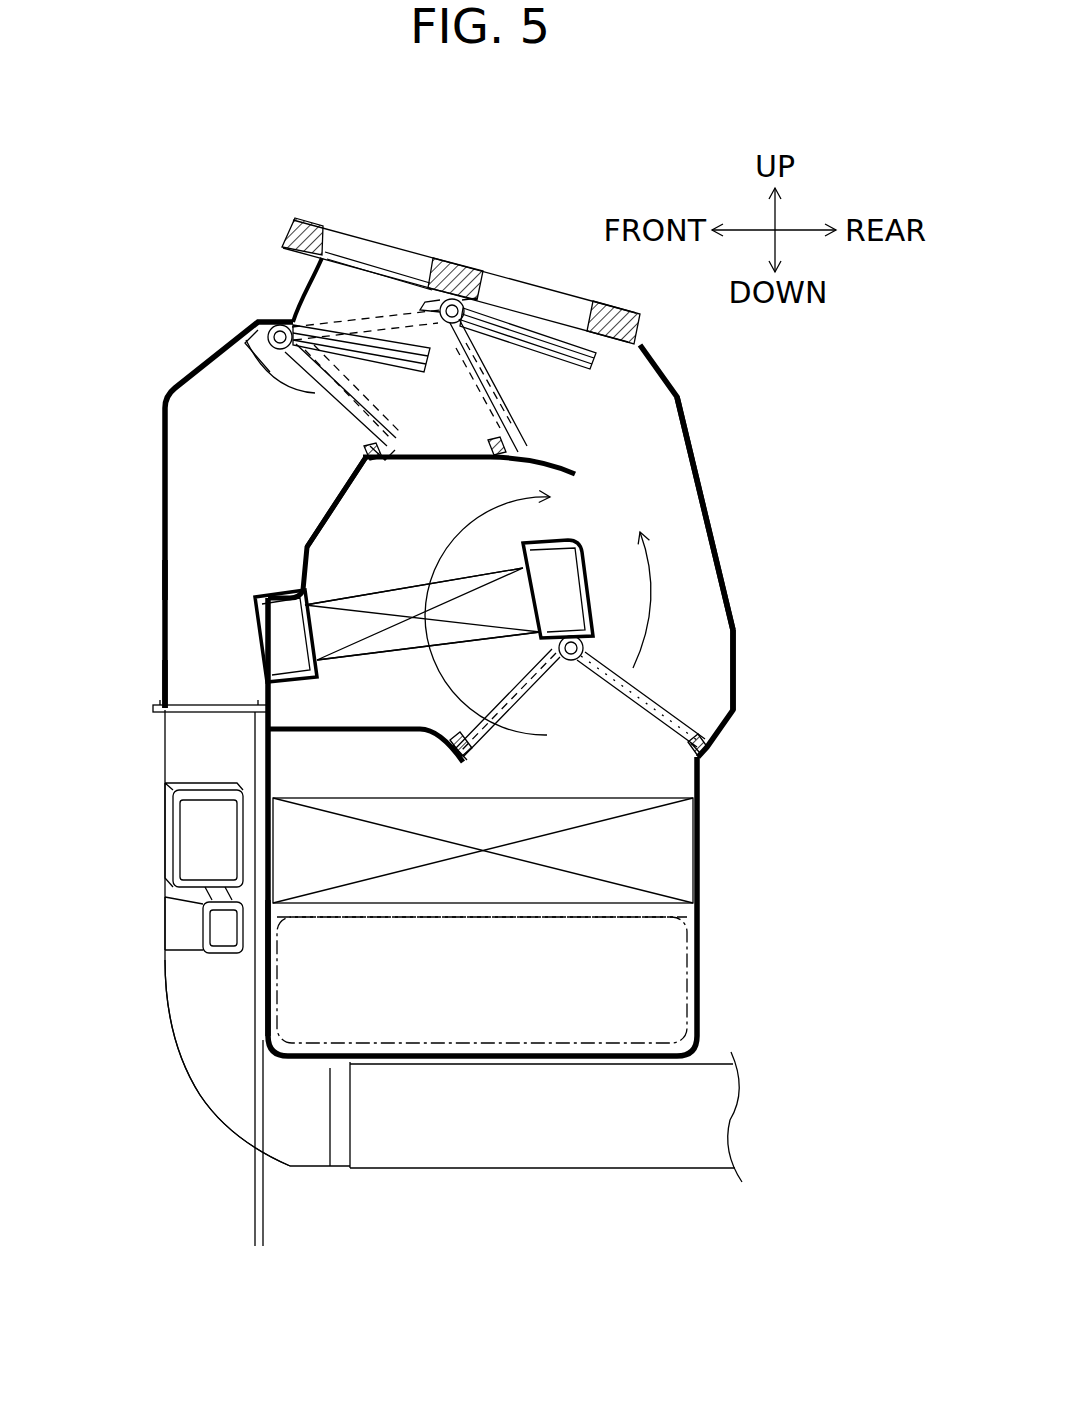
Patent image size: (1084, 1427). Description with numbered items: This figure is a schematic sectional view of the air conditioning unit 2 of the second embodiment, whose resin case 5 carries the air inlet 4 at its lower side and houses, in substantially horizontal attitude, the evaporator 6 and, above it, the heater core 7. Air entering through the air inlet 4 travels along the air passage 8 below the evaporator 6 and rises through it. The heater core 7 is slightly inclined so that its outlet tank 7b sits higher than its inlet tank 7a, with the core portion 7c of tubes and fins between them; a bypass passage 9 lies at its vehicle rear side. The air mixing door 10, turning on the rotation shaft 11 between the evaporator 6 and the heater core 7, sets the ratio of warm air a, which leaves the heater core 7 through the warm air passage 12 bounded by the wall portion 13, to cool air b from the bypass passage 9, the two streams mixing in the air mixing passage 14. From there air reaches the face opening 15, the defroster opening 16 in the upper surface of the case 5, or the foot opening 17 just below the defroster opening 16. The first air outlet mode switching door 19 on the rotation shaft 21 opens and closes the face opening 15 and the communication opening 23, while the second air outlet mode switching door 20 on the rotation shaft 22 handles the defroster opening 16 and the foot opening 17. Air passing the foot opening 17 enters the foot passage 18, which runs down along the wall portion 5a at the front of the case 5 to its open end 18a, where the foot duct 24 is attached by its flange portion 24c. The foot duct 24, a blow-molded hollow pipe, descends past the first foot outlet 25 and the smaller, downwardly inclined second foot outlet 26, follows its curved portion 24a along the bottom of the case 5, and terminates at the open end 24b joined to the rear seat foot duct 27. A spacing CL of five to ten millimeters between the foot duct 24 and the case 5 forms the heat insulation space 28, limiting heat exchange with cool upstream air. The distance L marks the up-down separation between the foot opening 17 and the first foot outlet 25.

The air conditioning unit 2 is at (180, 352).
The case 5 is at (236, 337).
The wall portion 5a is at (312, 630).
The air inlet 4 is at (690, 915).
The evaporator 6 is at (637, 853).
The heater core 7 is at (462, 572).
The inlet tank 7a is at (268, 606).
The outlet tank 7b is at (560, 573).
The core portion 7c is at (396, 634).
The air passage 8 is at (530, 970).
The bypass passage 9 is at (667, 663).
The air mixing door 10 is at (647, 697).
The rotation shaft 11 is at (582, 643).
The warm air passage 12 is at (400, 514).
The wall portion 13 is at (345, 455).
The air mixing passage 14 is at (648, 488).
The face opening 15 is at (510, 288).
The defroster opening 16 is at (430, 262).
The foot opening 17 is at (268, 388).
The foot passage 18 is at (222, 568).
The open end 18a is at (212, 706).
The first air outlet mode switching door 19 is at (565, 356).
The second air outlet mode switching door 20 is at (372, 318).
The rotation shaft 21 is at (476, 290).
The rotation shaft 22 is at (272, 327).
The communication opening 23 is at (470, 405).
The foot duct 24 is at (163, 762).
The curved portion 24a is at (224, 1125).
The open end 24b is at (340, 1150).
The duct flange 24c is at (180, 716).
The first foot outlet 25 is at (205, 843).
The second foot outlet 26 is at (222, 934).
The rear seat foot duct 27 is at (606, 1170).
The heat insulation space 28 is at (262, 983).
The warm air a is at (352, 540).
The cool air b is at (650, 585).
The distance L is at (270, 790).
The spacing CL is at (294, 1242).